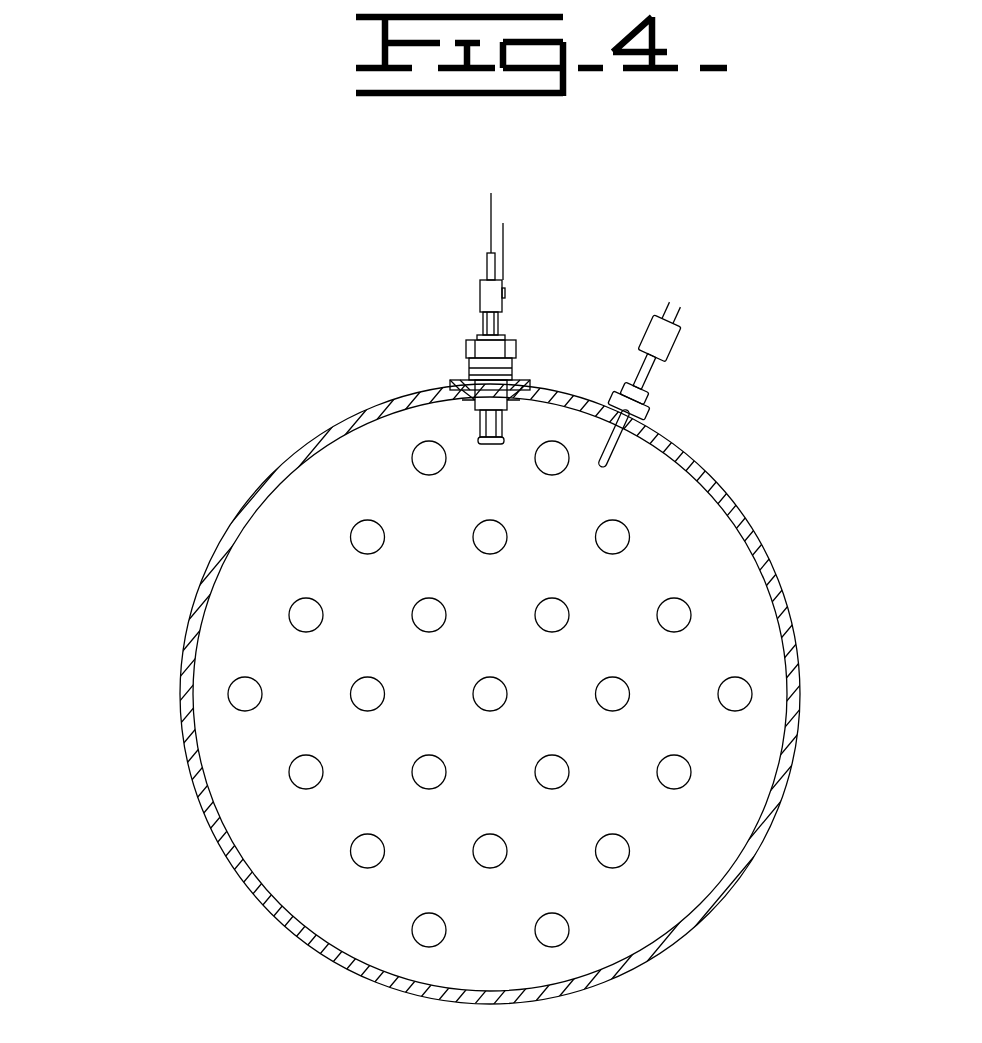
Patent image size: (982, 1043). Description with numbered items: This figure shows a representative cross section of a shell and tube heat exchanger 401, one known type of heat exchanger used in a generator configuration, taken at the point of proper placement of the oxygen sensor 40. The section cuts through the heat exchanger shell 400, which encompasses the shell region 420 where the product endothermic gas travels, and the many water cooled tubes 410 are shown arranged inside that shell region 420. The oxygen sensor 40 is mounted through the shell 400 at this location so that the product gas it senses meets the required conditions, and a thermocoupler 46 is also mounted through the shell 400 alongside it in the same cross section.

The oxygen sensor 40 is at (396, 298).
The thermocouple probe 46 is at (631, 289).
The shell and tube heat exchanger 401 is at (142, 694).
The heat exchanger shell 400 is at (747, 862).
The water cooled tubes 410 is at (752, 693).
The shell region 420 is at (620, 928).